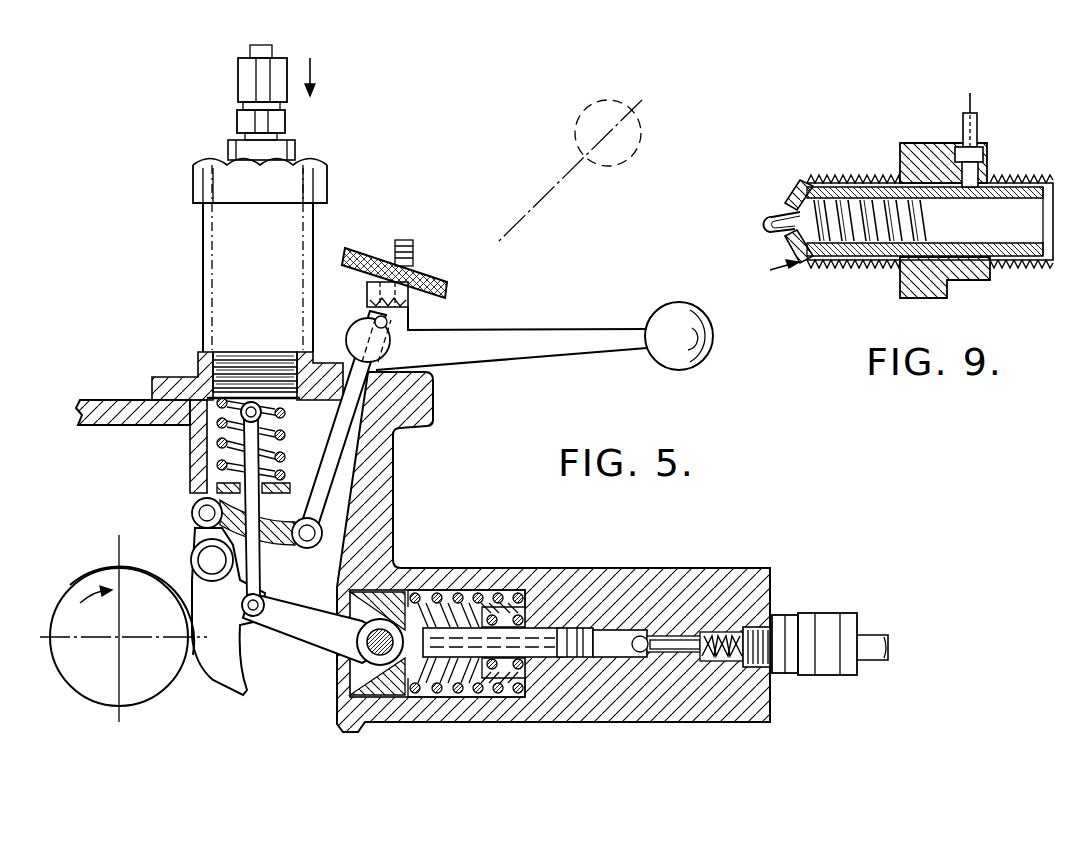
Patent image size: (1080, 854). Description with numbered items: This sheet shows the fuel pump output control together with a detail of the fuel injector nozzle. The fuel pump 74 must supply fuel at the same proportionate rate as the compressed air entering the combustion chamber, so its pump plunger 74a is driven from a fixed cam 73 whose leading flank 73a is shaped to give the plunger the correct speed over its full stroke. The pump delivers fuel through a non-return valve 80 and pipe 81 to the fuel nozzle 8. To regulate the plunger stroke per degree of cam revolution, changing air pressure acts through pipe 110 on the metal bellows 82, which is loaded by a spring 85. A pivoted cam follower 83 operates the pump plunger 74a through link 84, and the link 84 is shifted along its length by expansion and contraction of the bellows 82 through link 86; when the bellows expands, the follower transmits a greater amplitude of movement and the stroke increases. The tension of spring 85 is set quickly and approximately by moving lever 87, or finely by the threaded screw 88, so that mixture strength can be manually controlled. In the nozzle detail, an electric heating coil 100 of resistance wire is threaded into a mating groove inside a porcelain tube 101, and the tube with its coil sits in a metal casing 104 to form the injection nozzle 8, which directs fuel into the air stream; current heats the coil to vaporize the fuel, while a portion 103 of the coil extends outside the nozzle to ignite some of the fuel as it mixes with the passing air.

In FIG. 5, the pipe 110 is at (250, 50).
In FIG. 5, the metal bellows 82 is at (240, 362).
In FIG. 5, the spring 85 is at (283, 462).
In FIG. 5, the link 86 is at (258, 543).
In FIG. 5, the link 84 is at (290, 614).
In FIG. 5, the cam follower 83 is at (232, 663).
In FIG. 5, the cam 73 is at (139, 557).
In FIG. 5, the leading flank 73a is at (193, 652).
In FIG. 5, the fuel pump 74 is at (381, 483).
In FIG. 5, the pump plunger 74a is at (542, 640).
In FIG. 5, the non-return valve 80 is at (718, 598).
In FIG. 5, the pipe 81 is at (871, 645).
In FIG. 5, the lever 87 is at (560, 338).
In FIG. 5, the threaded screw 88 is at (416, 280).
In FIG. 9, the electric heating coil 100 is at (928, 224).
In FIG. 9, the tube 101 is at (862, 262).
In FIG. 9, the portion of the heating coil 103 is at (766, 232).
In FIG. 9, the metal casing 104 is at (937, 287).
In FIG. 9, the fuel nozzle 8 is at (778, 274).